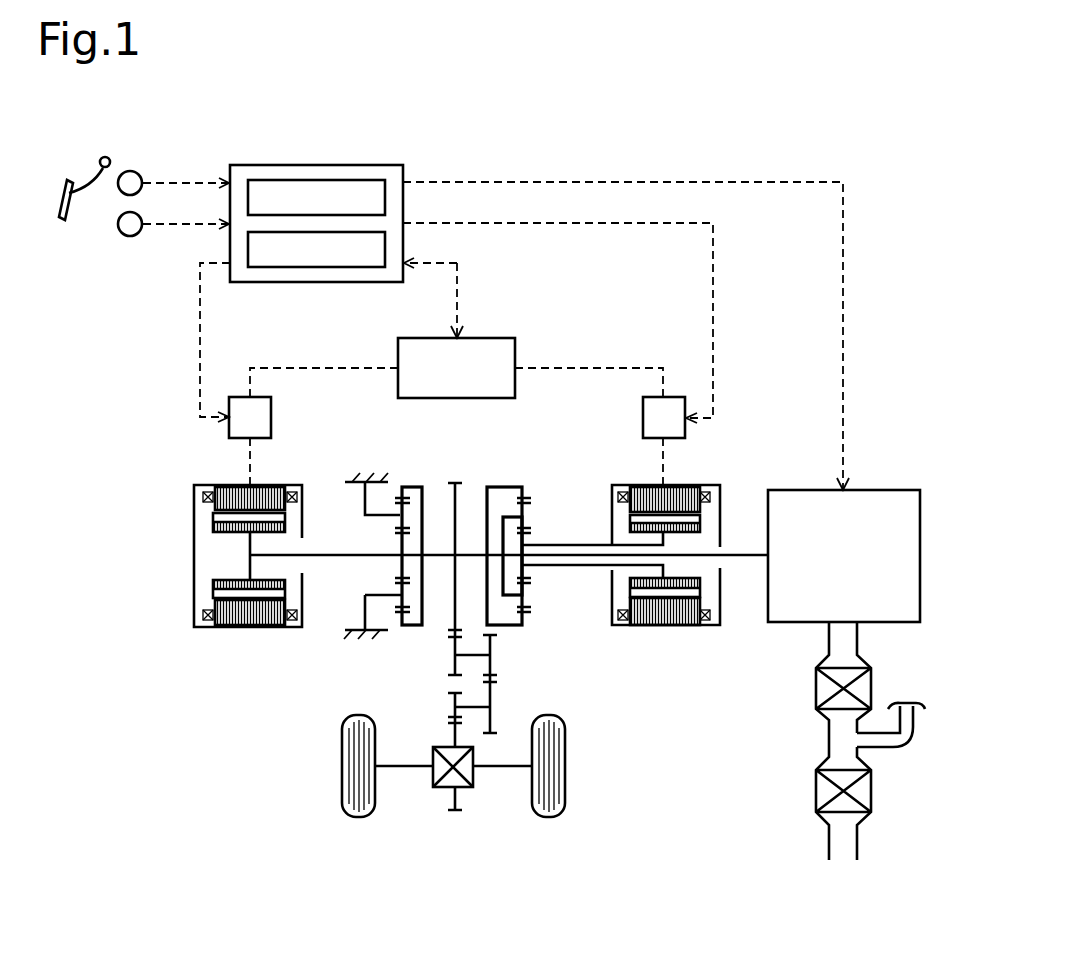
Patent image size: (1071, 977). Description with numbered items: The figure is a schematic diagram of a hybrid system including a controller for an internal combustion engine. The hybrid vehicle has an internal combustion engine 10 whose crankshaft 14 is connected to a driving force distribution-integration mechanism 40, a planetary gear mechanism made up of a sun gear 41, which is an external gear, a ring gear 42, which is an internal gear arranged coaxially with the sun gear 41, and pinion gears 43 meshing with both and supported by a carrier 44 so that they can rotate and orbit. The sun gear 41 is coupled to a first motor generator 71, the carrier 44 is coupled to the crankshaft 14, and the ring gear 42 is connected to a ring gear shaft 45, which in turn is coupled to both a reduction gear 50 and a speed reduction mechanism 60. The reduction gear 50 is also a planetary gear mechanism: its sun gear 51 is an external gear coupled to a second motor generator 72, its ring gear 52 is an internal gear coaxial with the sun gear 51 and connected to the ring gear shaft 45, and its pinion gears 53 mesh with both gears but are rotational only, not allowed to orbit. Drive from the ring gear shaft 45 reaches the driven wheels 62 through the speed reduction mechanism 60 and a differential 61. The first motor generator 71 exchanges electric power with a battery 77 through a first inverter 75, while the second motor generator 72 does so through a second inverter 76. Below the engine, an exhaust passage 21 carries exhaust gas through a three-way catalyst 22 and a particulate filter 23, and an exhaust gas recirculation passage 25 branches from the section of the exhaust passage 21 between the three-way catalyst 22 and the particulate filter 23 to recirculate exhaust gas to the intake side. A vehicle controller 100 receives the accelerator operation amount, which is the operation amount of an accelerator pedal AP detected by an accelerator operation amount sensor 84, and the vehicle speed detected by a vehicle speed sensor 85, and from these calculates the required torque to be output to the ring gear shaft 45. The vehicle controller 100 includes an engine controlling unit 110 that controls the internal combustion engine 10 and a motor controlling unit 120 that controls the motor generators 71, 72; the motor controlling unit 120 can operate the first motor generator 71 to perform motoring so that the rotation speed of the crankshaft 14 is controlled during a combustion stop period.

The internal combustion engine 10 is at (885, 650).
The crankshaft 14 is at (743, 557).
The exhaust passage 21 is at (832, 735).
The three-way catalyst 22 is at (820, 688).
The particulate filter 23 is at (820, 790).
The exhaust gas recirculation passage 25 is at (917, 723).
The driving force distribution-integration mechanism 40 is at (575, 542).
The sun gear 41 is at (523, 540).
The ring gear 42 is at (523, 493).
The pinion gears 43 is at (527, 587).
The carrier 44 is at (510, 625).
The ring gear shaft 45 is at (470, 552).
The reduction gear 50 is at (355, 550).
The sun gear 51 is at (392, 543).
The ring gear 52 is at (393, 487).
The pinion gears 53 is at (398, 602).
The speed reduction mechanism 60 is at (510, 685).
The differential 61 is at (443, 787).
The driven wheels 62 is at (340, 776).
The first motor generator 71 is at (707, 485).
The second motor generator 72 is at (193, 565).
The first inverter 75 is at (672, 397).
The second inverter 76 is at (240, 395).
The battery 77 is at (490, 338).
The accelerator operation amount sensor 84 is at (132, 172).
The vehicle speed sensor 85 is at (132, 236).
The vehicle controller 100 is at (377, 165).
The engine controlling unit 110 is at (342, 178).
The motor controlling unit 120 is at (343, 268).
The accelerator pedal AP is at (52, 203).